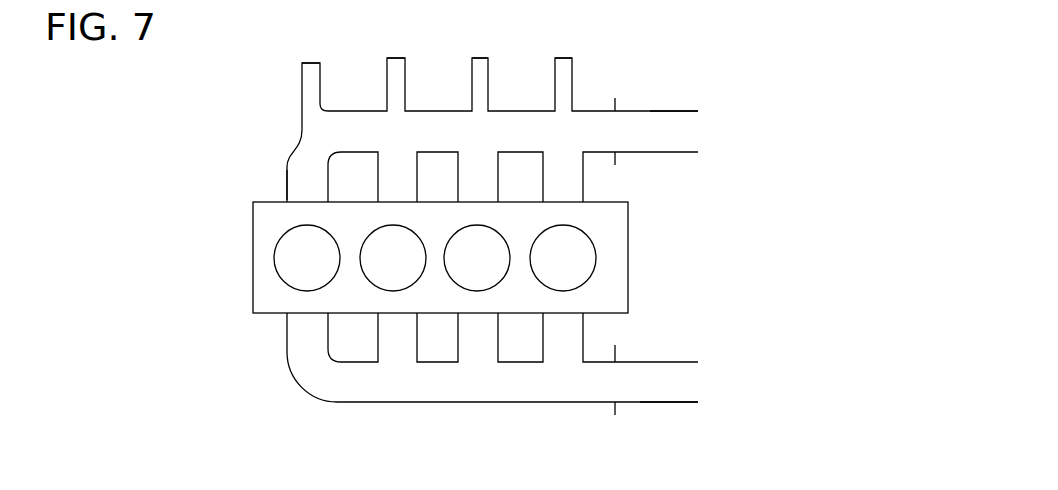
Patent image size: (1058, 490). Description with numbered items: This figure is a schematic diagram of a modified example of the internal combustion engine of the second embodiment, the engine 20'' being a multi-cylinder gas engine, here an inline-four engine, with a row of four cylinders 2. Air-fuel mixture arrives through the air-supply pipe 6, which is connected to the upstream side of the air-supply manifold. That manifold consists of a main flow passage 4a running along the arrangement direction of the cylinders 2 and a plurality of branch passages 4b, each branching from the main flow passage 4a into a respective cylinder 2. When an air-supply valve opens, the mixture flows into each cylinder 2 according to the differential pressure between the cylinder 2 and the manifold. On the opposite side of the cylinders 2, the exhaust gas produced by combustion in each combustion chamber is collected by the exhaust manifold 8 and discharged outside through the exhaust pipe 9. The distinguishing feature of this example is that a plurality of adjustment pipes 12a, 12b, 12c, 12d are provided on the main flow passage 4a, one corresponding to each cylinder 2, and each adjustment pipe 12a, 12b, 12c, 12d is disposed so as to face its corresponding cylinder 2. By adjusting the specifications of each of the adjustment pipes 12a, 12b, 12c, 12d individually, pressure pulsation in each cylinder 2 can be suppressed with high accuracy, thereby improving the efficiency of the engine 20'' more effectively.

The cylinder 2 is at (274, 258).
The main flow passage 4a is at (357, 110).
The branch passage 4b is at (583, 185).
The air-supply pipe 6 is at (678, 110).
The exhaust manifold 8 is at (434, 403).
The exhaust pipe 9 is at (670, 405).
The adjustment pipe 12a is at (302, 78).
The adjustment pipe 12b is at (405, 72).
The adjustment pipe 12c is at (488, 72).
The adjustment pipe 12d is at (572, 72).
The engine 20'' is at (548, 100).